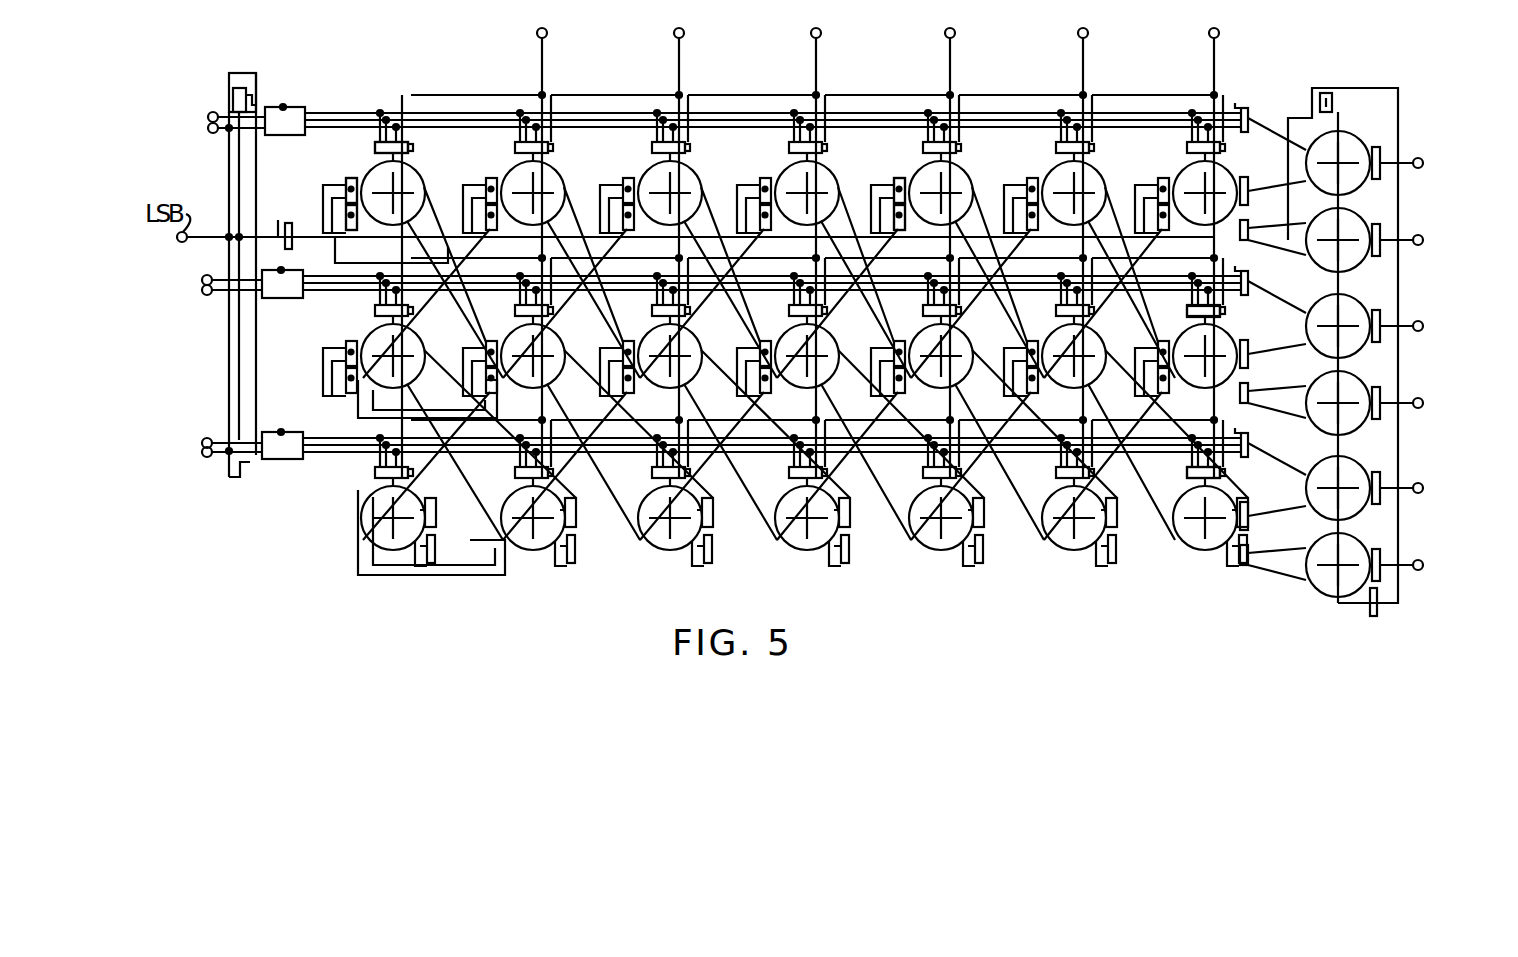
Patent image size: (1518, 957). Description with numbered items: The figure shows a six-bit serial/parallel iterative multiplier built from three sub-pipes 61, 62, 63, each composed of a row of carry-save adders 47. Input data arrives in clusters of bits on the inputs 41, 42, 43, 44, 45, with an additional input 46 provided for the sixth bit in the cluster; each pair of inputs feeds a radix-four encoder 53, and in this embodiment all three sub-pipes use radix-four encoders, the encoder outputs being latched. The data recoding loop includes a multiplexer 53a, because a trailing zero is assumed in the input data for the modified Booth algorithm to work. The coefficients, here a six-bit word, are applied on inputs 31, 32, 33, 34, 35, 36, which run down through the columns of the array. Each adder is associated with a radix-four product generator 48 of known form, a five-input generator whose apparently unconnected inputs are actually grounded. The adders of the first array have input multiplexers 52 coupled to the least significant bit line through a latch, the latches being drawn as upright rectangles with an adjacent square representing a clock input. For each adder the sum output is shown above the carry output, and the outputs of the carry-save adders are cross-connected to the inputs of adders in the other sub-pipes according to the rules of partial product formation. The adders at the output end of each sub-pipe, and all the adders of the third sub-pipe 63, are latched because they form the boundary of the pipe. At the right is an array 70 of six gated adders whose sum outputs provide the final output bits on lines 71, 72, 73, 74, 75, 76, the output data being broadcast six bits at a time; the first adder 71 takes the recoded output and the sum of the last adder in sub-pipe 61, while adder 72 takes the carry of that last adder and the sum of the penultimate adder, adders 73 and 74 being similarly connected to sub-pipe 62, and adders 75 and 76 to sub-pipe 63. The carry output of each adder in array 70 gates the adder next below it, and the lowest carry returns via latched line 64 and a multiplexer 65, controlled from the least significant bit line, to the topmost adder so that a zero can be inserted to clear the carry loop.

The coefficient input 31 is at (556, 16).
The coefficient input 32 is at (693, 16).
The coefficient input 33 is at (830, 16).
The coefficient input 34 is at (964, 16).
The coefficient input 35 is at (1097, 16).
The coefficient input 36 is at (1228, 16).
The data input 41 is at (213, 111).
The data input 42 is at (212, 133).
The data input 43 is at (207, 275).
The data input 44 is at (206, 295).
The data input 45 is at (207, 438).
The additional input 46 is at (206, 457).
The carry-save adder 47 is at (425, 193).
The radix-4 product generator 48 is at (413, 152).
The input multiplexer 52 is at (360, 178).
The radix-4 encoder 53 is at (300, 107).
The multiplexer 53a is at (245, 73).
The first sub-pipe 61 is at (325, 176).
The second sub-pipe 62 is at (325, 376).
The third sub-pipe 63 is at (318, 538).
The latched line 64 is at (1365, 88).
The multiplexer 65 is at (1332, 90).
The array of gated adders 70 is at (1317, 613).
The adder output 71 is at (1422, 160).
The adder output 72 is at (1422, 237).
The adder output 73 is at (1422, 323).
The adder output 74 is at (1422, 400).
The adder output 75 is at (1422, 485).
The adder output 76 is at (1422, 562).